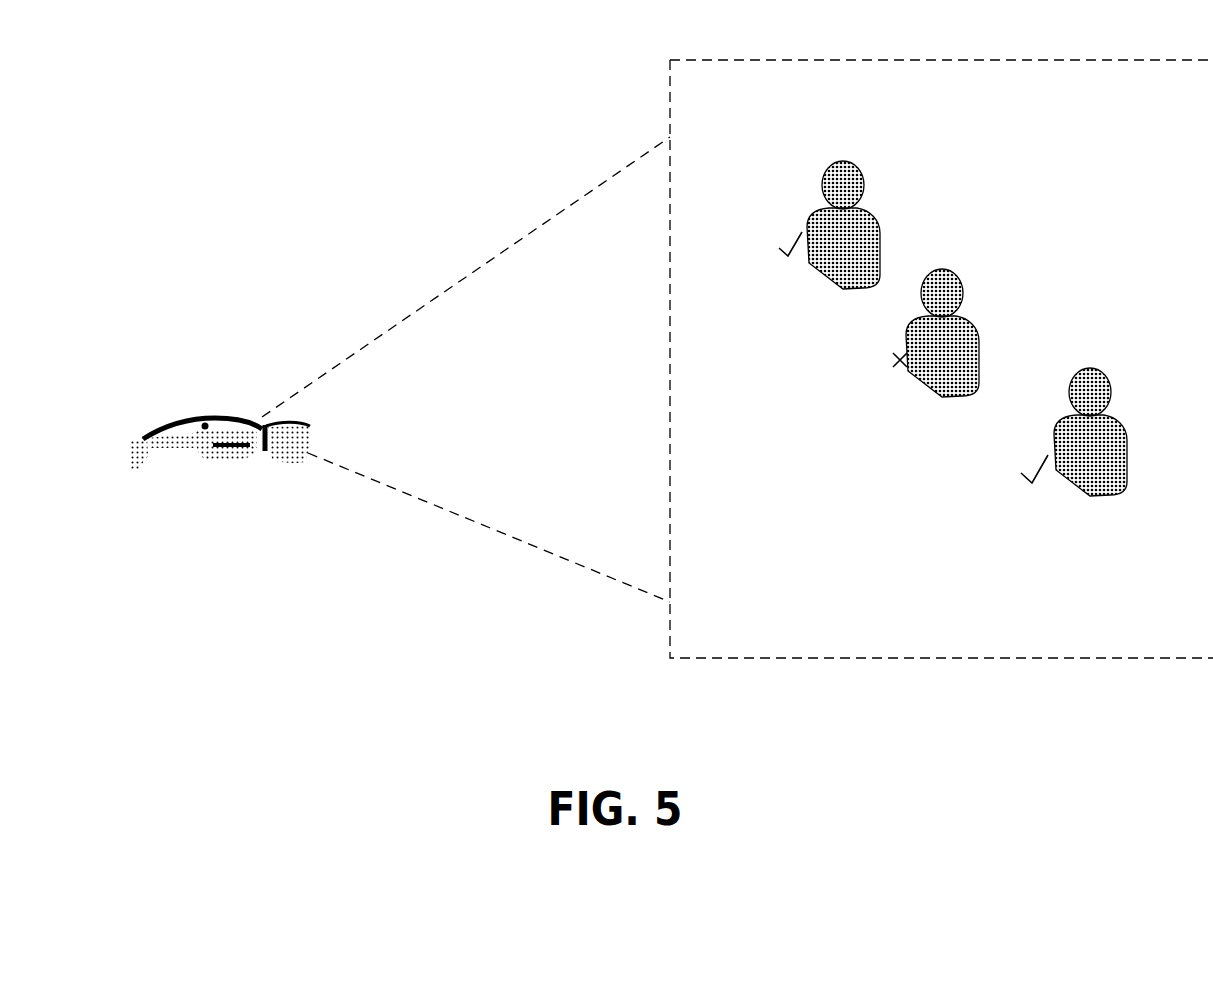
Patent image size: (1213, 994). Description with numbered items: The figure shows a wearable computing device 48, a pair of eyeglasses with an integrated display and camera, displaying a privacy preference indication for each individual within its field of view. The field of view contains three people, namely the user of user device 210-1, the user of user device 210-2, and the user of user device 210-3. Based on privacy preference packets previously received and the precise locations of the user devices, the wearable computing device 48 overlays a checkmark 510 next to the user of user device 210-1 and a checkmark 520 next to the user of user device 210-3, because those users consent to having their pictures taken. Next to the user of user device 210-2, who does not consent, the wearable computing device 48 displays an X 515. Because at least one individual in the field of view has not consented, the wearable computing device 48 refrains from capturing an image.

The wearable computing device 48 is at (233, 467).
The user device 210-1 is at (880, 219).
The user device 210-2 is at (955, 397).
The user device 210-3 is at (1102, 498).
The checkmark 510 is at (779, 248).
The X 515 is at (893, 362).
The checkmark 520 is at (1021, 473).